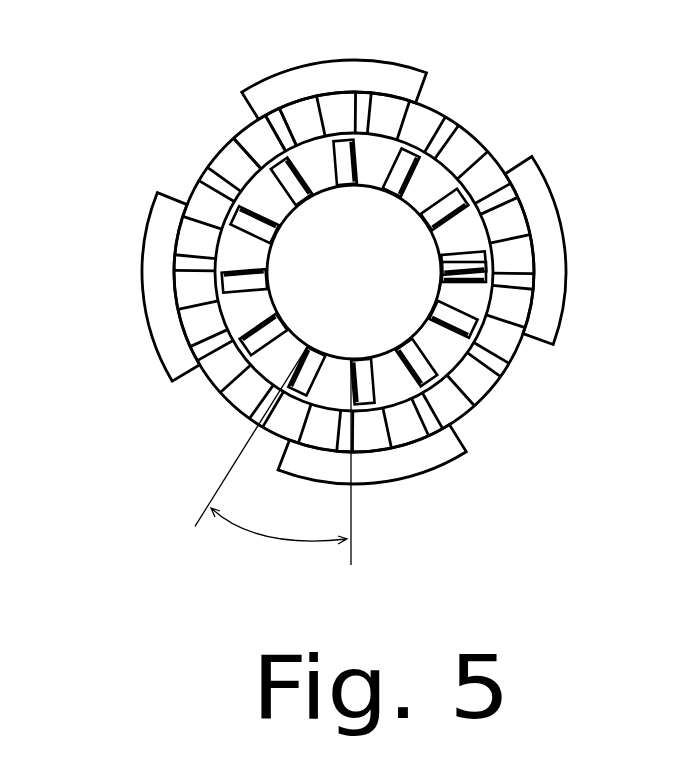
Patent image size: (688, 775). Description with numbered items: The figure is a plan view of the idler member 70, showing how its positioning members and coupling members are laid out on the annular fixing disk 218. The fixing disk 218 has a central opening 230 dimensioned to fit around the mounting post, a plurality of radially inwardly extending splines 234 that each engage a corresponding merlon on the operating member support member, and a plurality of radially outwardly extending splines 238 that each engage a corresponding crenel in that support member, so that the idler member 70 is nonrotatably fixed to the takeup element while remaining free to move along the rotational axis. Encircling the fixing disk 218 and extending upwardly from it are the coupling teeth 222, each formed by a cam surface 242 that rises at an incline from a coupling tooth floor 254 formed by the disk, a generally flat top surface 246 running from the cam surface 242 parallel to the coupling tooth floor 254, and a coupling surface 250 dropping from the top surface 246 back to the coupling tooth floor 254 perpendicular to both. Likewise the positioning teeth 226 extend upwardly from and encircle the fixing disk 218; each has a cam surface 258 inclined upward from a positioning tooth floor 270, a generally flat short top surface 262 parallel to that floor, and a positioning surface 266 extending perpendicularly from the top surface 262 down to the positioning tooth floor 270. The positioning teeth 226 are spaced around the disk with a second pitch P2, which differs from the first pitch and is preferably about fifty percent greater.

The idler member 70 is at (329, 259).
The annular fixing disk 218 is at (337, 259).
The coupling teeth 222 is at (219, 135).
The positioning teeth 226 is at (388, 189).
The central opening 230 is at (344, 320).
The radially inwardly extending splines 234 is at (463, 122).
The radially outwardly extending splines 238 is at (370, 65).
The cam surface 242 is at (217, 157).
The top surface 246 is at (252, 135).
The coupling surface 250 is at (265, 113).
The coupling tooth floor 254 is at (193, 170).
The cam surface 258 is at (440, 257).
The short top surface 262 is at (440, 270).
The positioning surface 266 is at (450, 282).
The positioning tooth floor 270 is at (437, 233).
The second pitch P2 is at (270, 537).